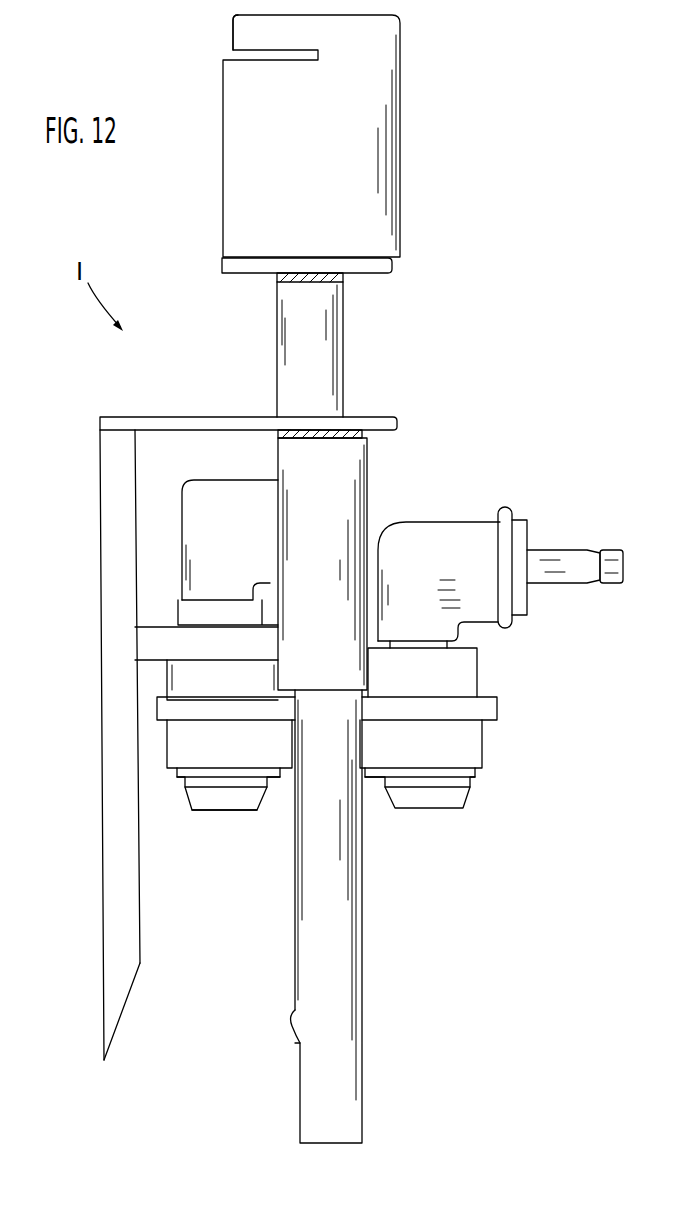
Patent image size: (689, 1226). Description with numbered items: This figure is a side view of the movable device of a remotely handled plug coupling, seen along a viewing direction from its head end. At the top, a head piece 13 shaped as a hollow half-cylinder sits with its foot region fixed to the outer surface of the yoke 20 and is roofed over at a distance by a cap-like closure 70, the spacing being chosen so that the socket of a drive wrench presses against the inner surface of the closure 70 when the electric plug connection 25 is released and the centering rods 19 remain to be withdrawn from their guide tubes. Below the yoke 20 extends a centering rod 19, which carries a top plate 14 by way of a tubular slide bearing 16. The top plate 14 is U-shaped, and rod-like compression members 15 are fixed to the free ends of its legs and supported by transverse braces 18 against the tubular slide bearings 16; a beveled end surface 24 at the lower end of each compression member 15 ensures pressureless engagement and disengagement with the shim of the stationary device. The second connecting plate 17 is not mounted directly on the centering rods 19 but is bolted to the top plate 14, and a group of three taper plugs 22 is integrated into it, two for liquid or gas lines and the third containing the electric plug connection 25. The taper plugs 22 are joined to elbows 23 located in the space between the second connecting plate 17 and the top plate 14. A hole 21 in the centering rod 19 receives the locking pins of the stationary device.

The head piece 13 is at (398, 188).
The top plate 14 is at (393, 413).
The compression member 15 is at (134, 512).
The slide bearing 16 is at (348, 482).
The second connecting plate 17 is at (490, 707).
The transverse brace 18 is at (157, 650).
The centering rod 19 is at (333, 350).
The yoke 20 is at (382, 266).
The hole 21 is at (301, 1022).
The taper plug 22 is at (245, 787).
The elbow 23 is at (187, 562).
The beveled end surface 24 is at (127, 1008).
The electric plug connection 25 is at (212, 810).
The cap-like closure 70 is at (235, 32).